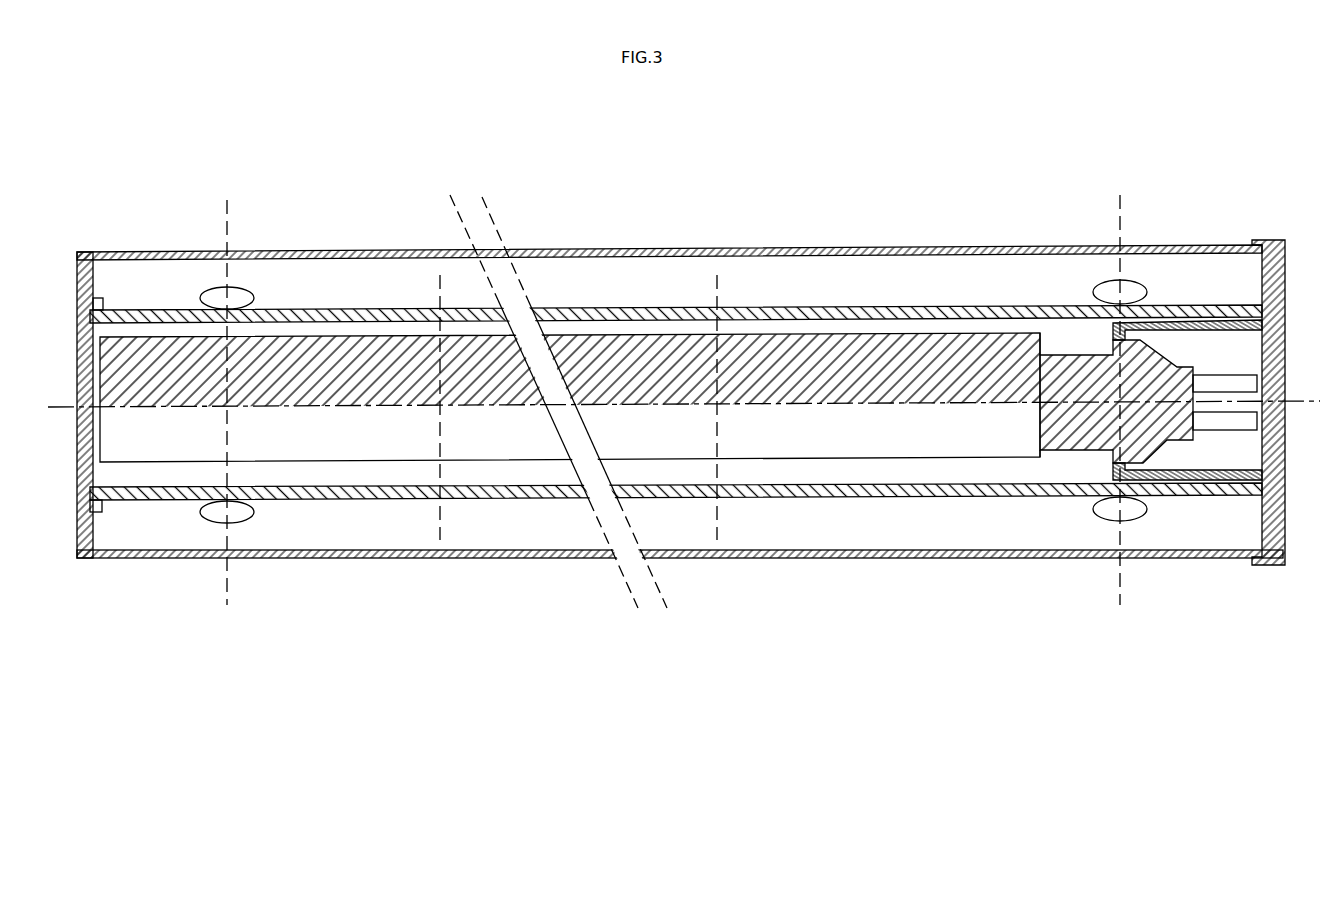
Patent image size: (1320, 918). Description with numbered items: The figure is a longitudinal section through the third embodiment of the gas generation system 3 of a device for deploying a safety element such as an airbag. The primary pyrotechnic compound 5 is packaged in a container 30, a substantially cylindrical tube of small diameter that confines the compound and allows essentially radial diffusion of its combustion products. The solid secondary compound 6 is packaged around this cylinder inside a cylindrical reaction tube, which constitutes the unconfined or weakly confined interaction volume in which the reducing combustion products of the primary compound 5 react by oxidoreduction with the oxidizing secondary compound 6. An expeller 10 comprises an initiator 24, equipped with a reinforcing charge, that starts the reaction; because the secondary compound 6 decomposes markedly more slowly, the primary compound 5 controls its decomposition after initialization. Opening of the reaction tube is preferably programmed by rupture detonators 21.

The gas generation system 3 is at (978, 585).
The primary pyrotechnic compound 5 is at (810, 375).
The secondary compound 6 is at (753, 527).
The expeller 10 is at (1072, 327).
The rupture detonators 21 is at (220, 557).
The initiator 24 is at (1143, 480).
The container 30 is at (302, 500).